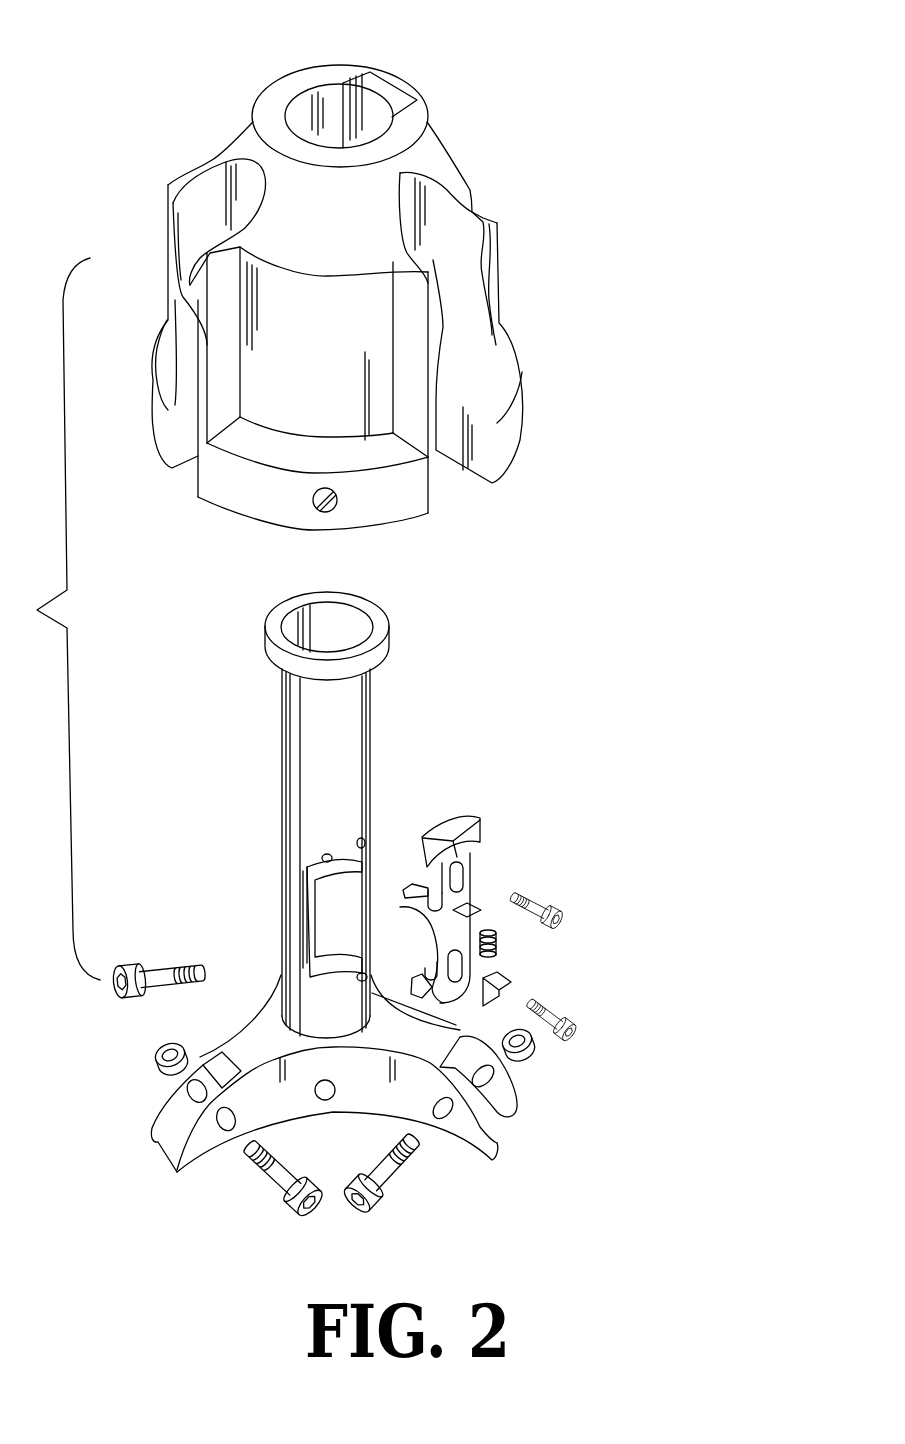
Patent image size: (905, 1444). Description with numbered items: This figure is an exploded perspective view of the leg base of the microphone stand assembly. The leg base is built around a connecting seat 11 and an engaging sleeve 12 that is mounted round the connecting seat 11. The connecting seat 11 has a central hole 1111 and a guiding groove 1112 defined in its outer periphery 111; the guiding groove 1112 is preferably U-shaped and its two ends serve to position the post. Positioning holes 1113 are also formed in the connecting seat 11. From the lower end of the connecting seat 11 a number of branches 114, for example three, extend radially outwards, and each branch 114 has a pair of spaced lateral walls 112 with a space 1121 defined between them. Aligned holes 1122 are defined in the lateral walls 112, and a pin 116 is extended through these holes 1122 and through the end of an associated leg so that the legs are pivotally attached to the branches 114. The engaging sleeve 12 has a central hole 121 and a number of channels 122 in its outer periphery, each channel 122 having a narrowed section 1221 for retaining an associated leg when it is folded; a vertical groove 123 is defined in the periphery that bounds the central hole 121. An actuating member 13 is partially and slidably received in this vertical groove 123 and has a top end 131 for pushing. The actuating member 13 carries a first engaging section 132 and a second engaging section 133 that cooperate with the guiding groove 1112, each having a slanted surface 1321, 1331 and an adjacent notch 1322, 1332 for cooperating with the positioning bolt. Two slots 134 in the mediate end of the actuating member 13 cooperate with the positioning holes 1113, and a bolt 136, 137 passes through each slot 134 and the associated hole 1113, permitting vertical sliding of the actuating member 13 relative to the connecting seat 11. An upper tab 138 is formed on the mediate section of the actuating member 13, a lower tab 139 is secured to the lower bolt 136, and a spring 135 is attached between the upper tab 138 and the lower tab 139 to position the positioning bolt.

The connecting seat 11 is at (346, 915).
The outer periphery 111 is at (372, 723).
The central hole 1111 is at (338, 622).
The guiding groove 1112 is at (261, 889).
The positioning holes 1113 is at (357, 843).
The lateral walls 112 is at (380, 1145).
The space 1121 is at (502, 1123).
The holes 1122 is at (443, 1117).
The branches 114 is at (250, 1040).
The pin 116 is at (280, 1182).
The engaging sleeve 12 is at (381, 268).
The central hole 121 is at (327, 100).
The channels 122 is at (463, 323).
The narrowed section 1221 is at (490, 278).
The vertical groove 123 is at (388, 100).
The actuating member 13 is at (424, 902).
The top end 131 is at (470, 817).
The first engaging section 132 is at (423, 993).
The slanted surface 1321 is at (307, 960).
The notch 1322 is at (437, 973).
The second engaging section 133 is at (410, 900).
The slanted surface 1331 is at (347, 860).
The notch 1332 is at (428, 897).
The slots 134 is at (460, 970).
The spring 135 is at (497, 942).
The bolt 136 is at (557, 1023).
The bolt 137 is at (540, 897).
The upper tab 138 is at (472, 905).
The lower tab 139 is at (507, 987).